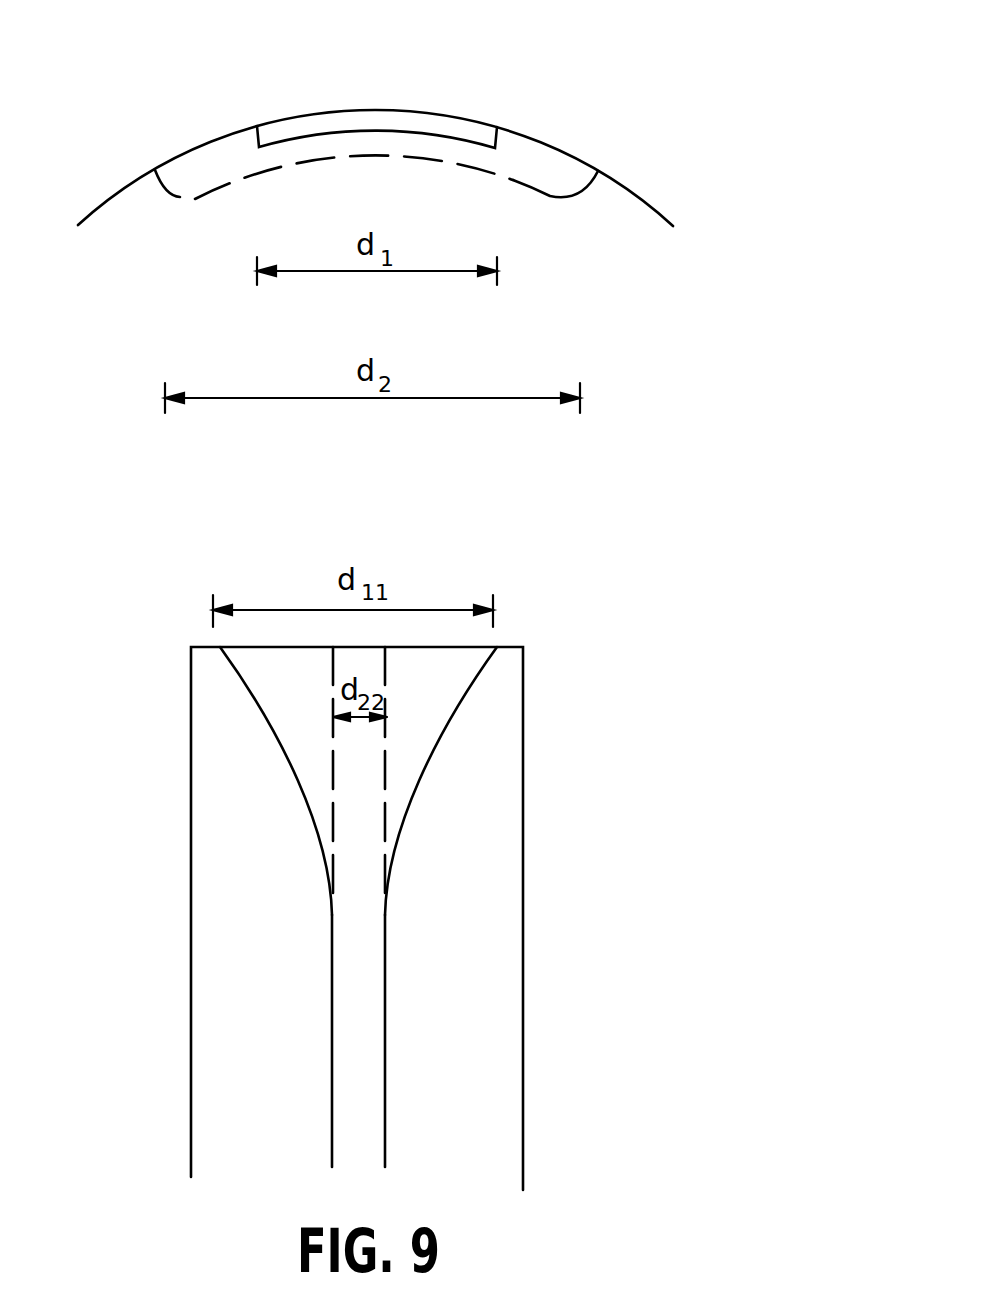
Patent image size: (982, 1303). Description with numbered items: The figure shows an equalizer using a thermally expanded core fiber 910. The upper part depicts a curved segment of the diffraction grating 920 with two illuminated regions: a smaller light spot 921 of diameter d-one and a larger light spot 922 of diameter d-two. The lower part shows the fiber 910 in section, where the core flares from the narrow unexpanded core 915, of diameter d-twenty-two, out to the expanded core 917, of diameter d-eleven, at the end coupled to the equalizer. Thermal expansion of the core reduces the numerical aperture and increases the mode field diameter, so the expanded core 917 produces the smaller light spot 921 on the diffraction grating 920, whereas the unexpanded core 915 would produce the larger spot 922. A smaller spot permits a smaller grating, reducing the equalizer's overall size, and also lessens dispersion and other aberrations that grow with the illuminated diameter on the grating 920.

The diffraction grating 920 is at (653, 207).
The light spot 921 is at (435, 127).
The light spot 922 is at (553, 168).
The thermally expanded core fiber 910 is at (487, 952).
The expanded core 917 is at (292, 703).
The unexpanded core 915 is at (363, 768).